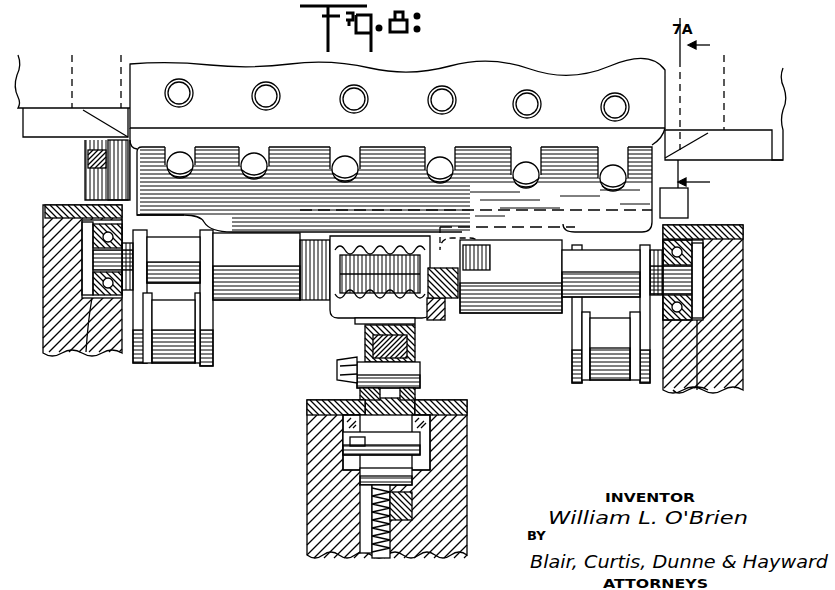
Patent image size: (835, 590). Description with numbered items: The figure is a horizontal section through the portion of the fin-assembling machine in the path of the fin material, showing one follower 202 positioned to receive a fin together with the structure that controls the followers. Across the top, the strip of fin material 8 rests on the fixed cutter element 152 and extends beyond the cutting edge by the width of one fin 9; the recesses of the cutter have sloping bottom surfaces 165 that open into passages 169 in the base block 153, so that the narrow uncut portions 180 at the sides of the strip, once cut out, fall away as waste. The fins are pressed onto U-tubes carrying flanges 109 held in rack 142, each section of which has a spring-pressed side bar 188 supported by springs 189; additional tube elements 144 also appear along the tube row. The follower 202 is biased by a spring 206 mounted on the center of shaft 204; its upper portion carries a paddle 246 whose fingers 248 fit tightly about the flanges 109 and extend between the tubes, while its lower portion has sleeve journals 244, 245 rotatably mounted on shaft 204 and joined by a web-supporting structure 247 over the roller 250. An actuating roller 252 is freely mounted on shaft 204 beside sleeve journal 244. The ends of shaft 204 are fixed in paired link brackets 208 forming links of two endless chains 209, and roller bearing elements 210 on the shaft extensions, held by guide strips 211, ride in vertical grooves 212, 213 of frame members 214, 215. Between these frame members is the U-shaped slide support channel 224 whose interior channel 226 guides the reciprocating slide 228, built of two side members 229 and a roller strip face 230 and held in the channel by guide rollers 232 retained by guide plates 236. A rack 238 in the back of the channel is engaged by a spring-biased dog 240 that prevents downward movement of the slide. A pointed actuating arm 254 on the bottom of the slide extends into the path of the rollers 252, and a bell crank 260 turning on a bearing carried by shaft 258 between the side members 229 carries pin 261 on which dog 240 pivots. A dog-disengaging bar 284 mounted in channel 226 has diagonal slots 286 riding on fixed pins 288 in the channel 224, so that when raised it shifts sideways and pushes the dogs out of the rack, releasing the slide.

The strip of fin material 8 is at (480, 84).
The fin 9 is at (186, 216).
The flanges 109 is at (341, 94).
The rack 142 is at (690, 196).
The balls 144 is at (176, 164).
The fixed cutter element 152 is at (717, 180).
The base block 153 is at (758, 160).
The bottom surfaces 165 is at (104, 126).
The passages 169 is at (74, 80).
The uncut portions 180 is at (133, 130).
The side bar 188 is at (108, 184).
The springs 189 is at (84, 157).
The follower 202 is at (310, 220).
The shaft 204 is at (610, 266).
The spring 206 is at (370, 244).
The link brackets 208 is at (136, 364).
The endless chains 209 is at (173, 364).
The roller bearing elements 210 is at (93, 226).
The guide strips 211 is at (56, 216).
The vertical groove 212 is at (685, 383).
The vertical groove 213 is at (91, 340).
The frame member 214 is at (720, 336).
The frame member 215 is at (64, 348).
The slide support channel 224 is at (458, 534).
The interior channel 226 is at (343, 450).
The reciprocating slide 228 is at (416, 350).
The side members 229 is at (349, 396).
The roller strip face 230 is at (365, 328).
The guide rollers 232 is at (350, 424).
The guide plates 236 is at (307, 402).
The rack 238 is at (425, 486).
The dog 240 is at (360, 477).
The sleeve journal 244 is at (548, 300).
The sleeve journal 245 is at (246, 290).
The paddle 246 is at (386, 166).
The web-supporting structure 247 is at (330, 312).
The fingers 248 is at (297, 148).
The roller 250 is at (360, 318).
The actuating roller 252 is at (448, 216).
The pointed actuating arm 254 is at (438, 320).
The shaft 258 is at (345, 368).
The bell crank 260 is at (416, 366).
The pin 261 is at (405, 443).
The dog-disengaging bar 284 is at (360, 546).
The diagonal slots 286 is at (350, 522).
The fixed pins 288 is at (350, 500).